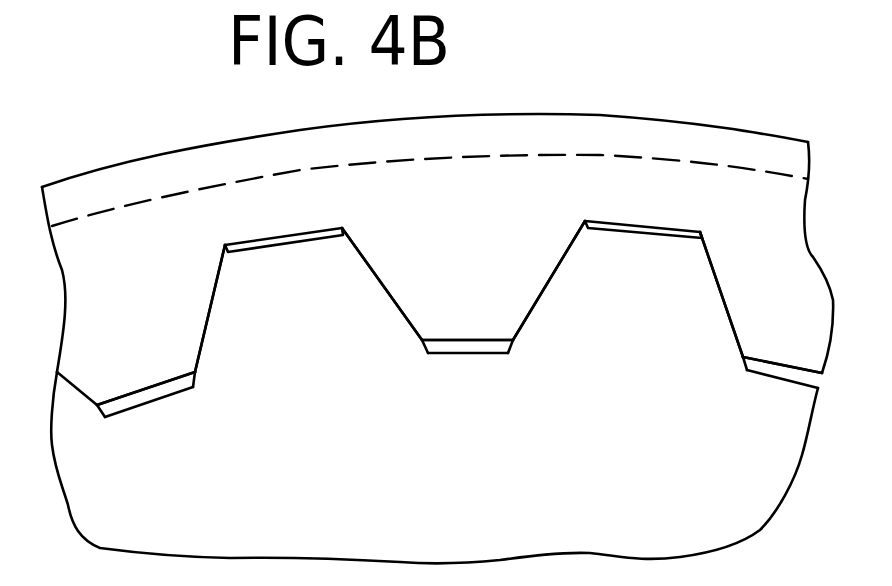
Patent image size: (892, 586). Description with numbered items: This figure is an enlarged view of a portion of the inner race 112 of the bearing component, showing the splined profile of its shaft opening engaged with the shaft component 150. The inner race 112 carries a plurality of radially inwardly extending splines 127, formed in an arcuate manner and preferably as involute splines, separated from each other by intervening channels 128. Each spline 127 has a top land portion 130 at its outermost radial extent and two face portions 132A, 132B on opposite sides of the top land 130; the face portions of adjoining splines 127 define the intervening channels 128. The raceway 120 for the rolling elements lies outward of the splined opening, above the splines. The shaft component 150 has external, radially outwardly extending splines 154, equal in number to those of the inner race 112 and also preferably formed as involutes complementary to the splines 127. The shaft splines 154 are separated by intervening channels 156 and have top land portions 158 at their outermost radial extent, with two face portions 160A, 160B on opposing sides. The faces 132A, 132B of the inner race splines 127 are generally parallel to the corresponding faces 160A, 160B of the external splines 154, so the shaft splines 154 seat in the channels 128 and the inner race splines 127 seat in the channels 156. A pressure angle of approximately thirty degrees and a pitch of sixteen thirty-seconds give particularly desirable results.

The inner race 112 is at (542, 194).
The raceway 120 is at (230, 184).
The spline 127 is at (116, 282).
The intervening channel 128 is at (270, 233).
The top land portion 158 is at (315, 244).
The top land portion 130 is at (140, 382).
The intervening channel 156 is at (160, 400).
The face portion 132A is at (378, 275).
The face portion 132B is at (213, 282).
The face portion 160A is at (400, 316).
The face portion 160B is at (198, 360).
The spline 154 is at (324, 351).
The shaft component 150 is at (482, 483).